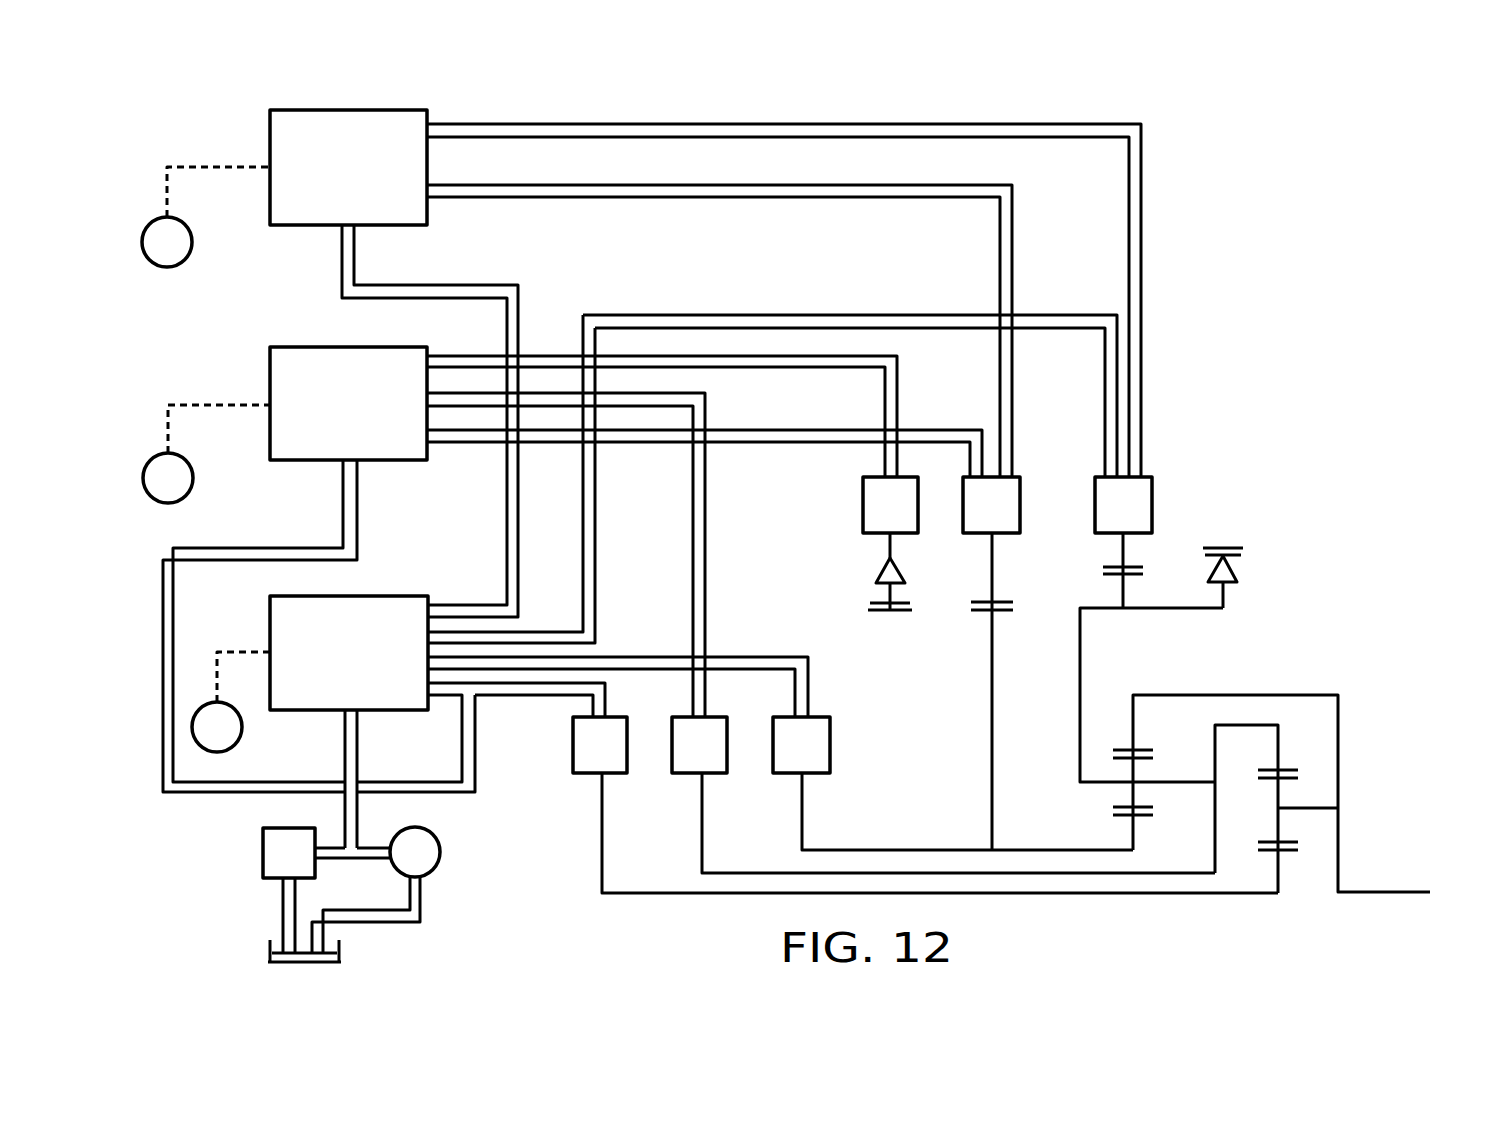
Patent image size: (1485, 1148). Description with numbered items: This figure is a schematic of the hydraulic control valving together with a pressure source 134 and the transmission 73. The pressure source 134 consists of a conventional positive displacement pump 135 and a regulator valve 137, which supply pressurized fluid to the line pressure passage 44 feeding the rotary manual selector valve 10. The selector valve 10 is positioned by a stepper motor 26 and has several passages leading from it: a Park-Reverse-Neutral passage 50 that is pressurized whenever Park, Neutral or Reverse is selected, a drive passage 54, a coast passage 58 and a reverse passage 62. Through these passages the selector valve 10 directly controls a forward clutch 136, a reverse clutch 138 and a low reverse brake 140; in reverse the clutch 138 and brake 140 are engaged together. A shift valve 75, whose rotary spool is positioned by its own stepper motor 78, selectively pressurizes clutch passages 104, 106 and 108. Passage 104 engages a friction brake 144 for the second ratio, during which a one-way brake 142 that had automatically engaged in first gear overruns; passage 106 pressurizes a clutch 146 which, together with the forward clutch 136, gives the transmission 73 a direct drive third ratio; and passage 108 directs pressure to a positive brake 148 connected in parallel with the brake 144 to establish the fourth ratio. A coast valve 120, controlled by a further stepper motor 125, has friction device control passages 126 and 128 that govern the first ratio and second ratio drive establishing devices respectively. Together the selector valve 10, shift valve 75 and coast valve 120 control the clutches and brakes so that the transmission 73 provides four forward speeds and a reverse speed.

The rotary manual selector valve 10 is at (280, 623).
The stepper motor 26 is at (200, 722).
The line pressure passage 44 is at (349, 809).
The Park-Reverse-Neutral passage 50 is at (543, 610).
The drive passage 54 is at (510, 690).
The coast passage 58 is at (490, 607).
The reverse passage 62 is at (668, 655).
The transmission 73 is at (1336, 667).
The shift valve 75 is at (283, 388).
The stepper motor 78 is at (150, 470).
The clutch passage 104 is at (553, 337).
The clutch passage 106 is at (700, 418).
The clutch passage 108 is at (843, 437).
The coast valve 120 is at (285, 145).
The stepper motor 125 is at (188, 243).
The friction device control passage 126 is at (785, 125).
The friction device control passage 128 is at (757, 193).
The pressure source 134 is at (443, 857).
The positive displacement pump 135 is at (427, 866).
The forward clutch 136 is at (578, 757).
The regulator valve 137 is at (263, 852).
The reverse clutch 138 is at (823, 760).
The low reverse brake 140 is at (1148, 503).
The one-way brake 142 is at (1236, 578).
The friction brake 144 is at (863, 520).
The clutch 146 is at (678, 762).
The positive brake 148 is at (1012, 492).